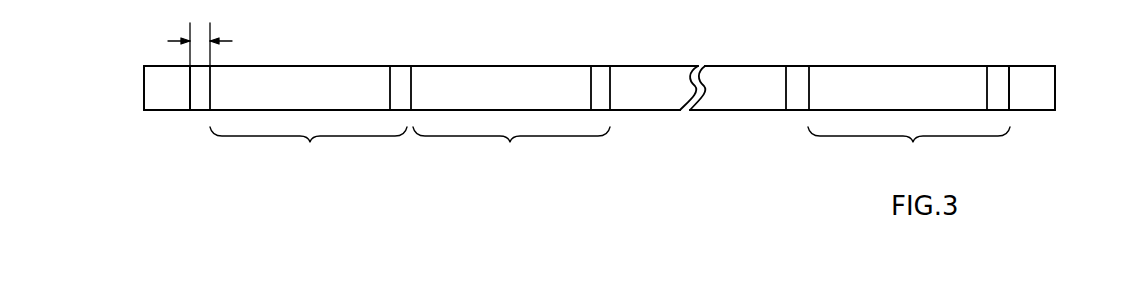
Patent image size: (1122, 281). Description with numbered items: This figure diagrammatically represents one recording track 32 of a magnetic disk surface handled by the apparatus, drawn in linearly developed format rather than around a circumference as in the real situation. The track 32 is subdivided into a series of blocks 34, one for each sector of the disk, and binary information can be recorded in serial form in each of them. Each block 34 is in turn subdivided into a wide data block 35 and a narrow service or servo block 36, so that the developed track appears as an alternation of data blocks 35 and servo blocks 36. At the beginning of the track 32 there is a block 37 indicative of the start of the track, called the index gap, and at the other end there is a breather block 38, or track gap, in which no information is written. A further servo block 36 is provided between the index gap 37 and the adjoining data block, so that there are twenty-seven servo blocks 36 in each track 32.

The track 32 is at (1065, 82).
The block 34 is at (610, 148).
The data block 35 is at (320, 73).
The servo block 36 is at (200, 90).
The index gap 37 is at (152, 100).
The breather block 38 is at (1033, 75).